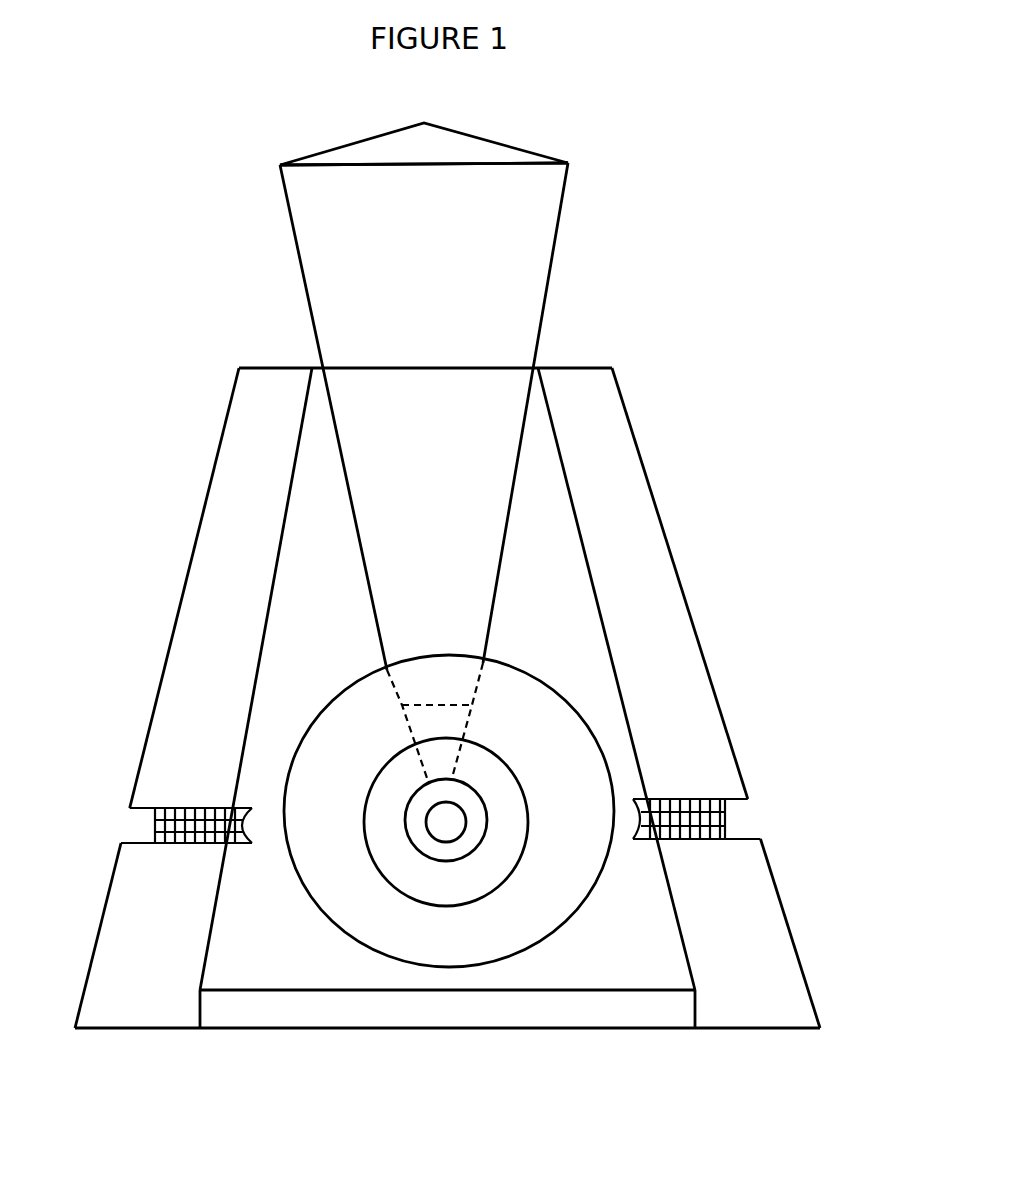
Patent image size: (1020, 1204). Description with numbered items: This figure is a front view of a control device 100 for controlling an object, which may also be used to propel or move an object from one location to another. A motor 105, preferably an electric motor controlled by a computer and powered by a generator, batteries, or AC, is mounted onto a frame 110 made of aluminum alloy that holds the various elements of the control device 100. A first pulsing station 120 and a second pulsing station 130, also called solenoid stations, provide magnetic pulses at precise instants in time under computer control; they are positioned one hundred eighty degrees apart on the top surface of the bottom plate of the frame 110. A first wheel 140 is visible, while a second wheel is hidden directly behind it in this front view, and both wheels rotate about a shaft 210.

The control device 100 is at (790, 296).
The motor 105 is at (522, 260).
The frame 110 is at (576, 1046).
The first pulsing station 120 is at (169, 858).
The second pulsing station 130 is at (712, 859).
The first wheel 140 is at (328, 892).
The shaft 210 is at (460, 830).